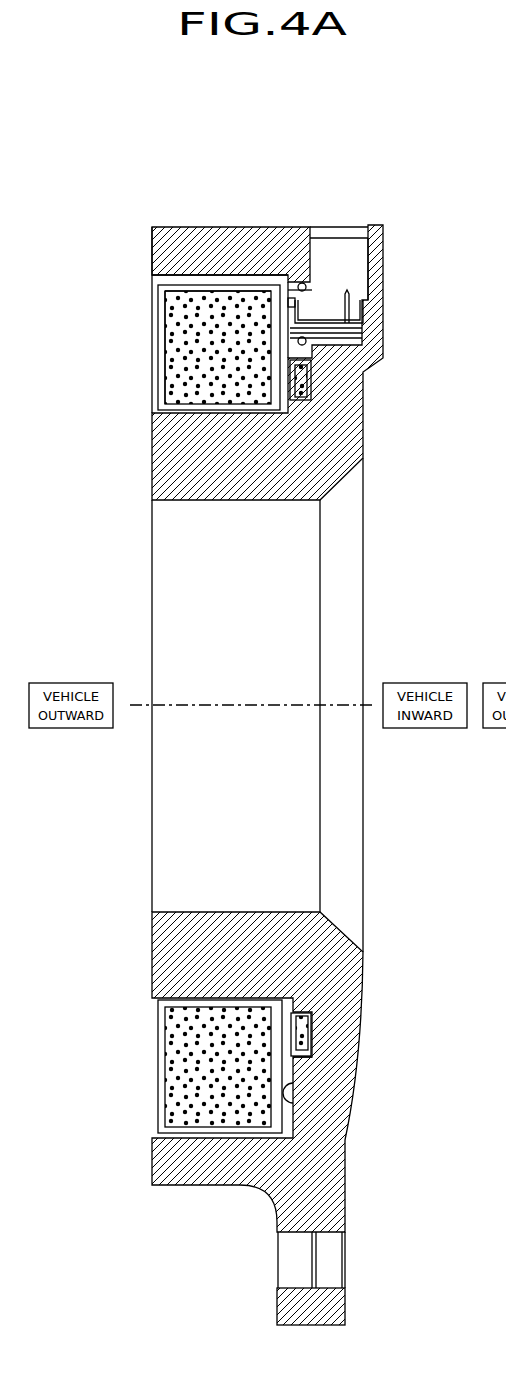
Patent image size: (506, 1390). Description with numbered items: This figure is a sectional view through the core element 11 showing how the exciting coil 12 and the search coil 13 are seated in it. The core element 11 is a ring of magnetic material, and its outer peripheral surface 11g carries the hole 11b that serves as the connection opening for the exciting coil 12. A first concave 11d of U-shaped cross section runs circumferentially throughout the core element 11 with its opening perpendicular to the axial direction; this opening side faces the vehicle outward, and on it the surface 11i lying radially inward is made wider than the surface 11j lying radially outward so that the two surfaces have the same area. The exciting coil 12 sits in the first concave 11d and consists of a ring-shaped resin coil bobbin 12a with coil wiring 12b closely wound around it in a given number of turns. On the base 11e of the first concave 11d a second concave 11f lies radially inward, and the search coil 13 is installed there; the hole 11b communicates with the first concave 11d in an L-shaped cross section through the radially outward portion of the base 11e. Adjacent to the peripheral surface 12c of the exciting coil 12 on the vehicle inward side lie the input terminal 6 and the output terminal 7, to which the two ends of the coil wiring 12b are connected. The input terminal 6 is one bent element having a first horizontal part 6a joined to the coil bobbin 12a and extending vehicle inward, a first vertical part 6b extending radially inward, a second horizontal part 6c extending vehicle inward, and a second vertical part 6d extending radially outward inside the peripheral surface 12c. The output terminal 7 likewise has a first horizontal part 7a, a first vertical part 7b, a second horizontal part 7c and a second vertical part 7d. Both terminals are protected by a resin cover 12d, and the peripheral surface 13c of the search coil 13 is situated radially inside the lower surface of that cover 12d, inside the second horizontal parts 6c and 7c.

The core element 11 is at (249, 727).
The peripheral surface 11g is at (198, 227).
The surface lying radially inward 11i is at (152, 452).
The surface lying radially outward 11j is at (152, 253).
The first concave 11d is at (167, 280).
The hole for wiring the exciting coil 11b is at (333, 257).
The base 11e is at (293, 1093).
The second concave 11f is at (302, 1058).
The exciting coil 12 is at (266, 637).
The coil bobbin 12a is at (162, 352).
The coil wiring 12b is at (172, 377).
The peripheral surface 12c is at (243, 287).
The cover 12d is at (358, 262).
The input terminal 6 is at (398, 270).
The output terminal 7 is at (352, 287).
The first horizontal part 6a is at (290, 215).
The first horizontal part 7a is at (283, 300).
The first vertical part 6b is at (378, 387).
The first vertical part 7b is at (365, 378).
The second horizontal part 6c is at (377, 348).
The second horizontal part 7c is at (363, 337).
The second vertical part 6d is at (380, 286).
The second vertical part 7d is at (363, 318).
The search coil 13 is at (368, 708).
The peripheral surface 13c is at (305, 368).